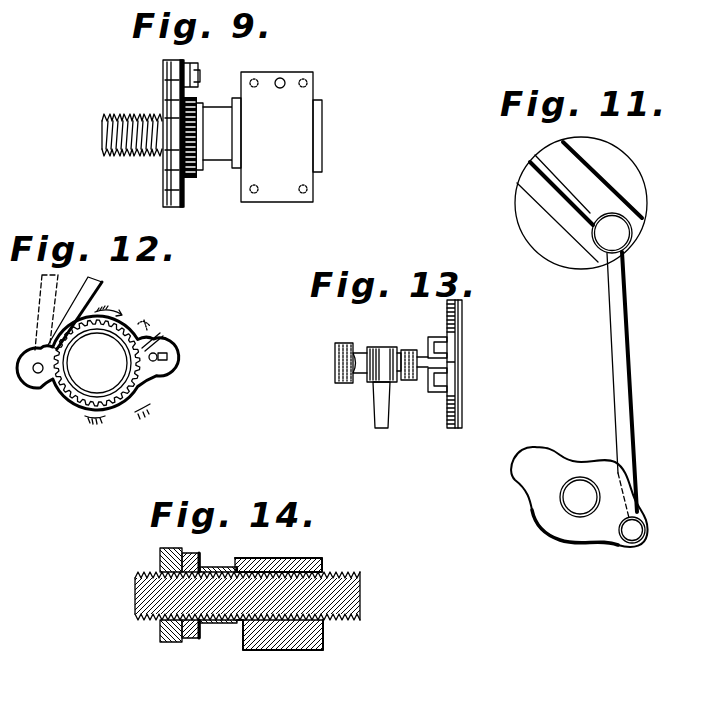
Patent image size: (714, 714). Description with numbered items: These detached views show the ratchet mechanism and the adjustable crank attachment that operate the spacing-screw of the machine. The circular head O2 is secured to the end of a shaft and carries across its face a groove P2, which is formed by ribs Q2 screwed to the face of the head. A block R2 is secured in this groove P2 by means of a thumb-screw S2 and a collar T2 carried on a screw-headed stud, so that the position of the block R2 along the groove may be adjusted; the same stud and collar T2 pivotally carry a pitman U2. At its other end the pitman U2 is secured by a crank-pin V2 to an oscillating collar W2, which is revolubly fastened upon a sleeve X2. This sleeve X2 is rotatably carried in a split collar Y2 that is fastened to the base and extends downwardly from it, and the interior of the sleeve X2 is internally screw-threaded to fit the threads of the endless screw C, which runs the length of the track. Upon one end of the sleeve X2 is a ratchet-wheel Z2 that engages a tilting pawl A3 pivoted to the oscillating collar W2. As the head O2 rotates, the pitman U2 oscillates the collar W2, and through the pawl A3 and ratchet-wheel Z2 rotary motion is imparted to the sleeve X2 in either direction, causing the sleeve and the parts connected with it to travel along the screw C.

In FIG. 9, the endless screw C is at (100, 130).
In FIG. 11, the endless screw C is at (588, 494).
In FIG. 14, the endless screw C is at (360, 590).
In FIG. 9, the oscillating collar W2 is at (163, 168).
In FIG. 12, the oscillating collar W2 is at (165, 368).
In FIG. 11, the oscillating collar W2 is at (560, 460).
In FIG. 14, the oscillating collar W2 is at (160, 553).
In FIG. 9, the ratchet-wheel Z2 is at (197, 178).
In FIG. 12, the ratchet-wheel Z2 is at (83, 418).
In FIG. 14, the ratchet-wheel Z2 is at (186, 640).
In FIG. 9, the split collar Y2 is at (290, 116).
In FIG. 11, the split collar Y2 is at (649, 533).
In FIG. 14, the split collar Y2 is at (323, 643).
In FIG. 9, the sleeve X2 is at (323, 140).
In FIG. 12, the sleeve X2 is at (117, 397).
In FIG. 11, the sleeve X2 is at (580, 506).
In FIG. 14, the sleeve X2 is at (230, 625).
In FIG. 12, the crank-pin V2 is at (46, 362).
In FIG. 11, the crank-pin V2 is at (632, 330).
In FIG. 12, the tilting pawl A3 is at (158, 350).
In FIG. 13, the thumb-screw S2 is at (337, 352).
In FIG. 11, the thumb-screw S2 is at (633, 236).
In FIG. 13, the pitman U2 is at (362, 382).
In FIG. 13, the block R2 is at (401, 352).
In FIG. 13, the collar T2 is at (391, 392).
In FIG. 13, the ribs Q2 is at (437, 337).
In FIG. 11, the ribs Q2 is at (584, 160).
In FIG. 13, the circular head O2 is at (463, 354).
In FIG. 11, the circular head O2 is at (625, 166).
In FIG. 13, the groove P2 is at (447, 347).
In FIG. 11, the groove P2 is at (545, 166).